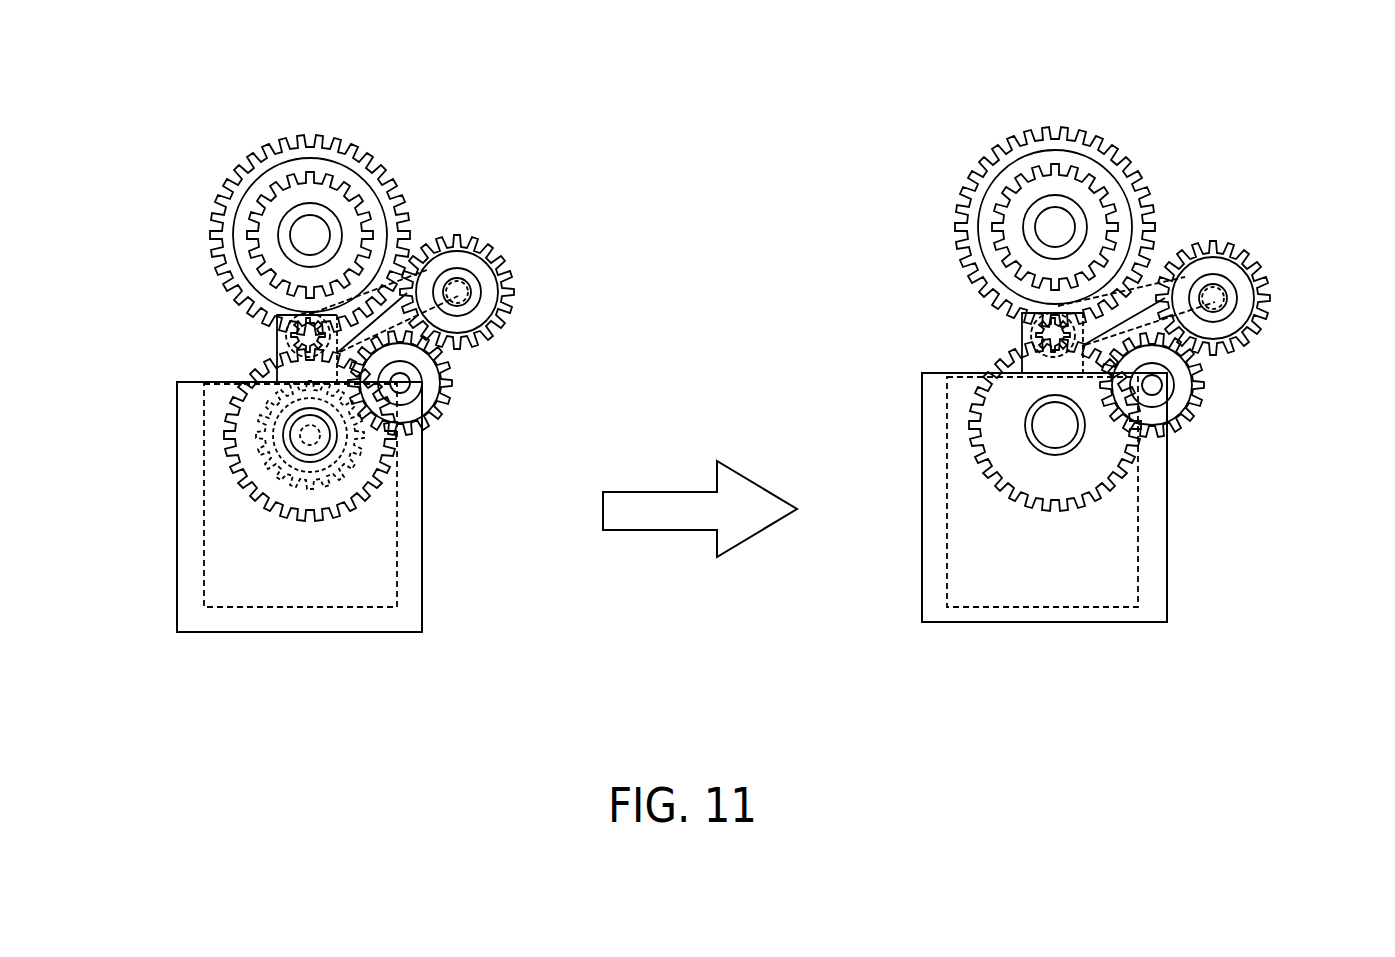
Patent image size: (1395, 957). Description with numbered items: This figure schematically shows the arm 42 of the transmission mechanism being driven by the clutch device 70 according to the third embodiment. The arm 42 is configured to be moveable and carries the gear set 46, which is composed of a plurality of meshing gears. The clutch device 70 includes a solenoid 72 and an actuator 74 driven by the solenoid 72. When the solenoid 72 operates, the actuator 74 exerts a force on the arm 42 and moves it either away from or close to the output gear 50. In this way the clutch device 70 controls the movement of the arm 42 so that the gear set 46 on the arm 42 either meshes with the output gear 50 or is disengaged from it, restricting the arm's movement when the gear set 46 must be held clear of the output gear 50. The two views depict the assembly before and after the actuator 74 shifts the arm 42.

The output gear 50 is at (253, 168).
The second gear set 46 is at (518, 251).
The arm 42 is at (442, 362).
The actuator 74 is at (424, 267).
The solenoid 72 is at (230, 550).
The clutch device 70 is at (422, 610).